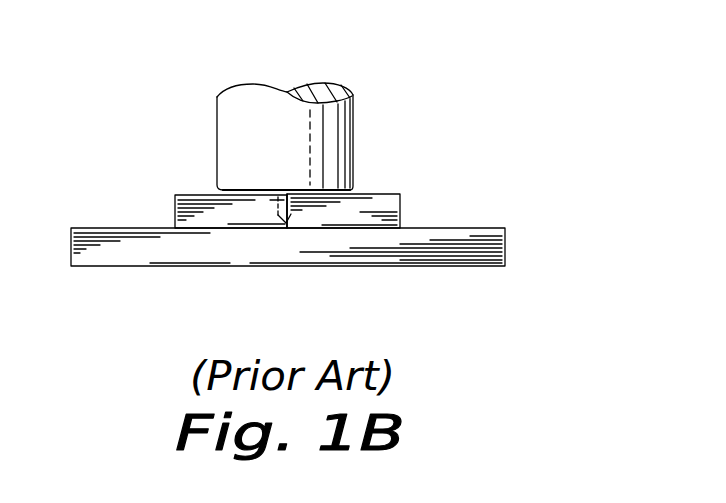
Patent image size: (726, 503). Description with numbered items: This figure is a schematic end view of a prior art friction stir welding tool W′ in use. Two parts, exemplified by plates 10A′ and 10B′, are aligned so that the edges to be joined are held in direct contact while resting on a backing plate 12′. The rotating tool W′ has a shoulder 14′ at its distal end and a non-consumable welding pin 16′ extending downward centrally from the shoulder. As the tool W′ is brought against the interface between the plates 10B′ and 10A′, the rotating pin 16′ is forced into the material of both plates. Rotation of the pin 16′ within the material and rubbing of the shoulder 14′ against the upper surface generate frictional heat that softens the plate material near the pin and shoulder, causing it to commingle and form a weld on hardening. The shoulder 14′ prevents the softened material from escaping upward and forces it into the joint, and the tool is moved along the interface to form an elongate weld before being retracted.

The FSW tool W′ is at (400, 72).
The plate 10A′ is at (395, 205).
The plate 10B′ is at (177, 211).
The backing plate 12′ is at (497, 228).
The shoulder 14′ is at (338, 191).
The welding pin 16′ is at (280, 200).